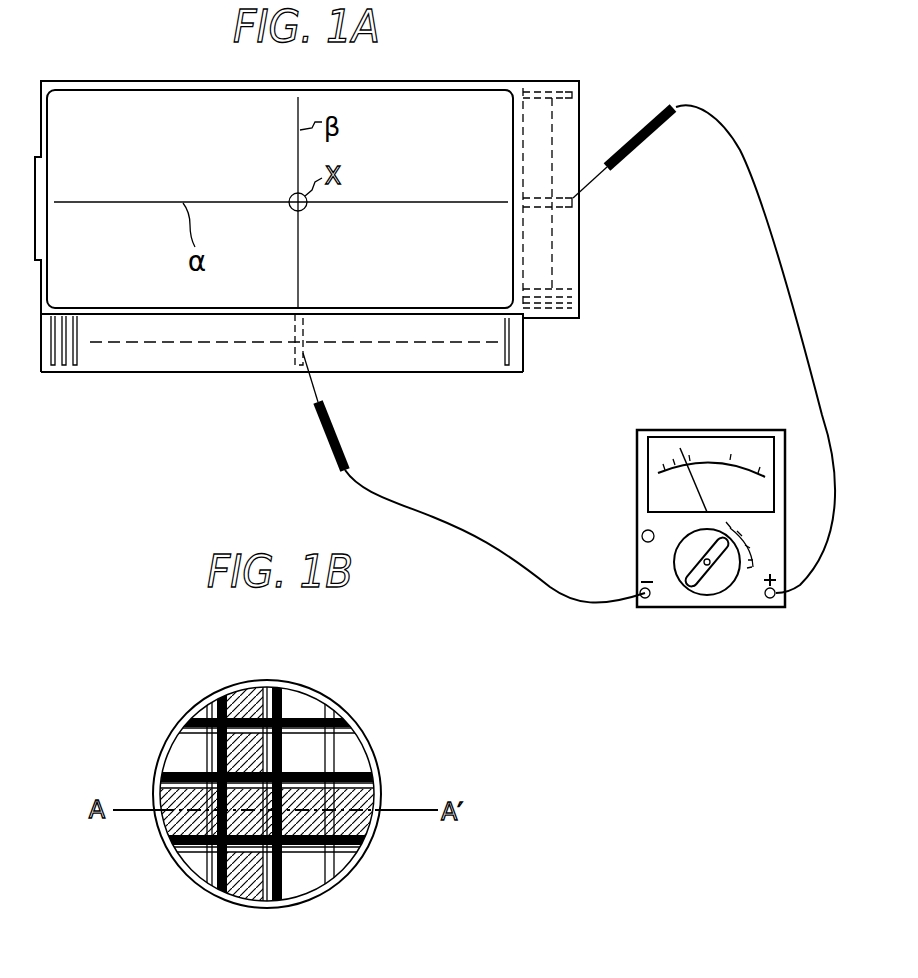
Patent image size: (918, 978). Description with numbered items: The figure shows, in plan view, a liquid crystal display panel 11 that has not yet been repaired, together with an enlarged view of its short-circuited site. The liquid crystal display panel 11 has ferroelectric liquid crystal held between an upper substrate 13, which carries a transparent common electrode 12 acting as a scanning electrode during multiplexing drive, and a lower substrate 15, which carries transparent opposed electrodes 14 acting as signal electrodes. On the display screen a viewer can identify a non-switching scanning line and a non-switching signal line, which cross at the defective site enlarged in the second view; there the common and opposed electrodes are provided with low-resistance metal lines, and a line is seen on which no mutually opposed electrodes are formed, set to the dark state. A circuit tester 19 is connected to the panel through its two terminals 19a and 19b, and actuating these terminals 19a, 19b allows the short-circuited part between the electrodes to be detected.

In FIG. 1A, the liquid crystal display panel 11 is at (477, 72).
In FIG. 1A, the transparent common electrode 12 is at (568, 77).
In FIG. 1B, the transparent common electrode 12 is at (357, 758).
In FIG. 1A, the upper substrate 13 is at (570, 263).
In FIG. 1A, the transparent opposed electrodes 14 is at (515, 350).
In FIG. 1B, the transparent opposed electrodes 14 is at (312, 703).
In FIG. 1A, the lower substrate 15 is at (413, 375).
In FIG. 1A, the circuit tester 19 is at (723, 608).
In FIG. 1A, the terminal of circuit tester 19a is at (310, 382).
In FIG. 1A, the terminal of circuit tester 19b is at (588, 180).